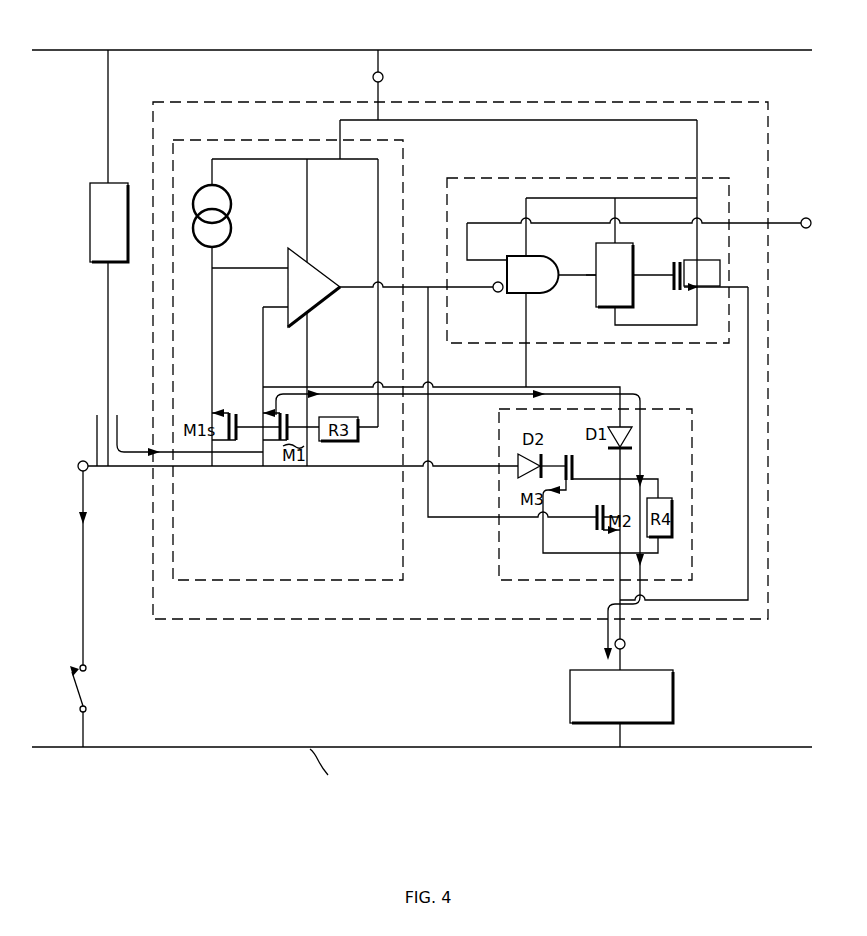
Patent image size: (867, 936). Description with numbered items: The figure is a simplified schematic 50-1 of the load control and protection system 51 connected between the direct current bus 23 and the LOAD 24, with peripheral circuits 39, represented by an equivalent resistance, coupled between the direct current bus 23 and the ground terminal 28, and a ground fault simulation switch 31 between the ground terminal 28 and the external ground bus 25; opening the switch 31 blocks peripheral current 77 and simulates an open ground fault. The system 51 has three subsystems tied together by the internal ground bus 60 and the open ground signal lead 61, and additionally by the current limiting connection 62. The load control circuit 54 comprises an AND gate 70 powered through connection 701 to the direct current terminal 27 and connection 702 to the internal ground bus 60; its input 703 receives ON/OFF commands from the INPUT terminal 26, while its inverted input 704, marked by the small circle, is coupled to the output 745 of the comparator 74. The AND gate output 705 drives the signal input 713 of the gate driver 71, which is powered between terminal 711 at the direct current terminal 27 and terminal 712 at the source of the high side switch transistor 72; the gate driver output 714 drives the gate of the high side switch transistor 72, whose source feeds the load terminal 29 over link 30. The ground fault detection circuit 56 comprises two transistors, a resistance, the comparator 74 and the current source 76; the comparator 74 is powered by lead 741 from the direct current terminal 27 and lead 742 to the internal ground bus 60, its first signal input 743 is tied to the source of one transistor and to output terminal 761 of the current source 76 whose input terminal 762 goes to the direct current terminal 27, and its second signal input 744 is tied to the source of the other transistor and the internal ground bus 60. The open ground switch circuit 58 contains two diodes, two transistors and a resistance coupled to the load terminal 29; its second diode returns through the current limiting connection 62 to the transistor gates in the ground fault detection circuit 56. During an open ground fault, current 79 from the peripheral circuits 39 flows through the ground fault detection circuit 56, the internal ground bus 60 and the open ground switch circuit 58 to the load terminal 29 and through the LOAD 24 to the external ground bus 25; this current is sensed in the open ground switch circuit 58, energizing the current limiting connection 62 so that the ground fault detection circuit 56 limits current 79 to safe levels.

The direct current bus 23 is at (232, 50).
The direct current terminal 27 is at (396, 75).
The peripheral circuits 39 is at (90, 208).
The current source 76 is at (231, 210).
The input terminal of current source 762 is at (212, 184).
The output terminal of current source 761 is at (212, 250).
The first signal input of comparator 743 is at (288, 266).
The second signal input of comparator 744 is at (288, 306).
The comparator 74 is at (316, 297).
The comparator power lead 741 is at (310, 220).
The comparator ground lead 742 is at (310, 340).
The comparator output 745 is at (342, 287).
The AND gate power connection 701 is at (525, 212).
The AND gate input 703 is at (490, 260).
The AND gate 70 is at (540, 284).
The inverted input of AND gate 704 is at (495, 291).
The AND gate output 705 is at (566, 276).
The AND gate ground connection 702 is at (527, 325).
The gate driver power terminal 711 is at (614, 216).
The gate driver signal input 713 is at (594, 273).
The gate driver 71 is at (626, 265).
The gate driver output 714 is at (638, 272).
The high side switch transistor 72 is at (706, 262).
The gate driver return terminal 712 is at (650, 324).
The load control circuit 54 is at (730, 180).
The INPUT terminal 26 is at (806, 228).
The internal ground bus 60 is at (502, 388).
The open ground signal lead 61 is at (428, 444).
The current limiting connection 62 is at (465, 467).
The link 30 is at (748, 366).
The peripheral current 79 is at (130, 450).
The ground terminal 28 is at (78, 464).
The peripheral current 77 is at (90, 486).
The ground fault simulation switch 31 is at (76, 690).
The ground fault detection circuit 56 is at (432, 580).
The open ground switch circuit 58 is at (552, 580).
The load control and protection system 51 is at (270, 619).
The load terminal 29 is at (624, 641).
The LOAD 24 is at (570, 688).
The external ground bus 25 is at (288, 750).
The simplified schematic 50-1 is at (445, 836).